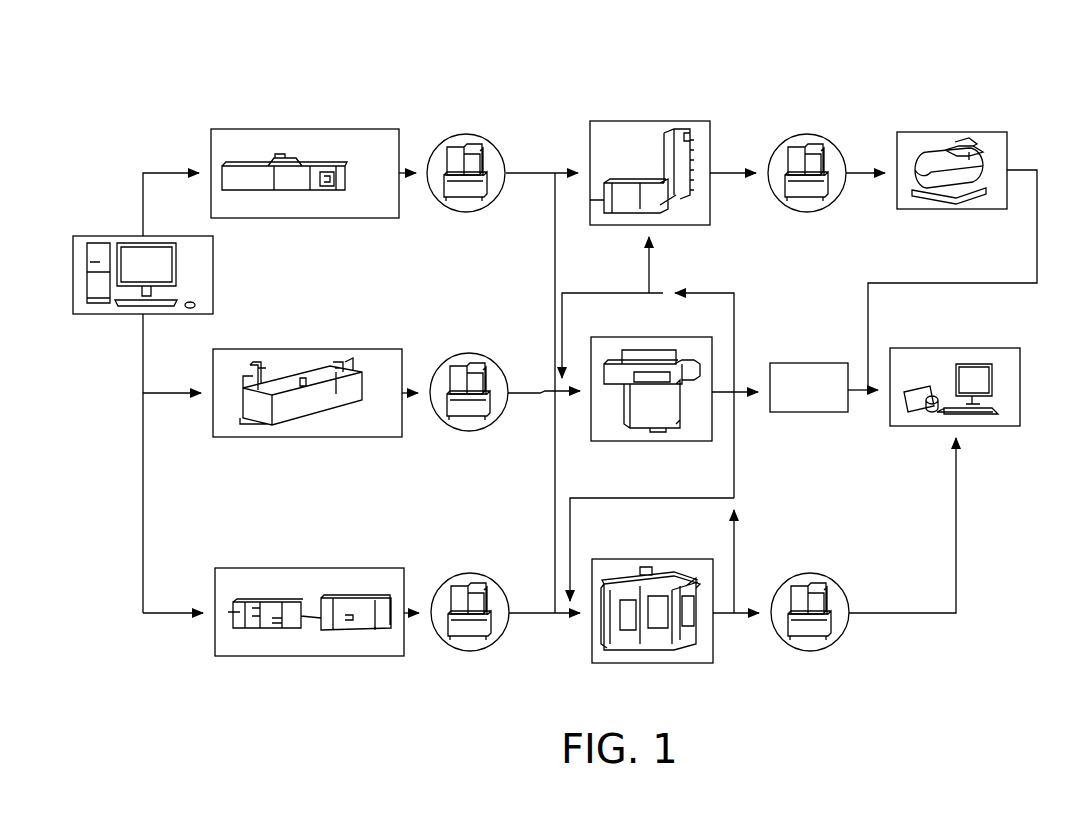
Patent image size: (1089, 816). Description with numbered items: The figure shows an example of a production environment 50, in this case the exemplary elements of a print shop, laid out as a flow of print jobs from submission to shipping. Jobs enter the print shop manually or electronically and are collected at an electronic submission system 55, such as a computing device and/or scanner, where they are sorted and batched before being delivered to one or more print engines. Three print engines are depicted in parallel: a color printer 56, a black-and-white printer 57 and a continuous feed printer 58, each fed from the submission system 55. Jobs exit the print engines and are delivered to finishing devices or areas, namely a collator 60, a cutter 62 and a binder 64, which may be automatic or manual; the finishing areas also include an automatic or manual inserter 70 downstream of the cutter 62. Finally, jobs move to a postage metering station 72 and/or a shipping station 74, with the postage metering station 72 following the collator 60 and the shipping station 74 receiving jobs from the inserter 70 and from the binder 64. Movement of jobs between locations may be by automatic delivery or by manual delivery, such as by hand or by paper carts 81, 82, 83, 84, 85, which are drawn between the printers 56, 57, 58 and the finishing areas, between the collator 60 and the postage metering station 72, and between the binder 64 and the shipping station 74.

The production environment 50 is at (164, 118).
The electronic submission system 55 is at (103, 315).
The color printer 56 is at (320, 218).
The black-and-white printer 57 is at (322, 437).
The continuous feed printer 58 is at (326, 656).
The collator 60 is at (658, 225).
The cutter 62 is at (660, 441).
The binder 64 is at (662, 663).
The inserter 70 is at (808, 412).
The postage metering station 72 is at (948, 209).
The shipping station 74 is at (980, 426).
The paper cart 81 is at (466, 212).
The paper cart 82 is at (469, 431).
The paper cart 83 is at (470, 651).
The paper cart 84 is at (806, 211).
The paper cart 85 is at (810, 650).